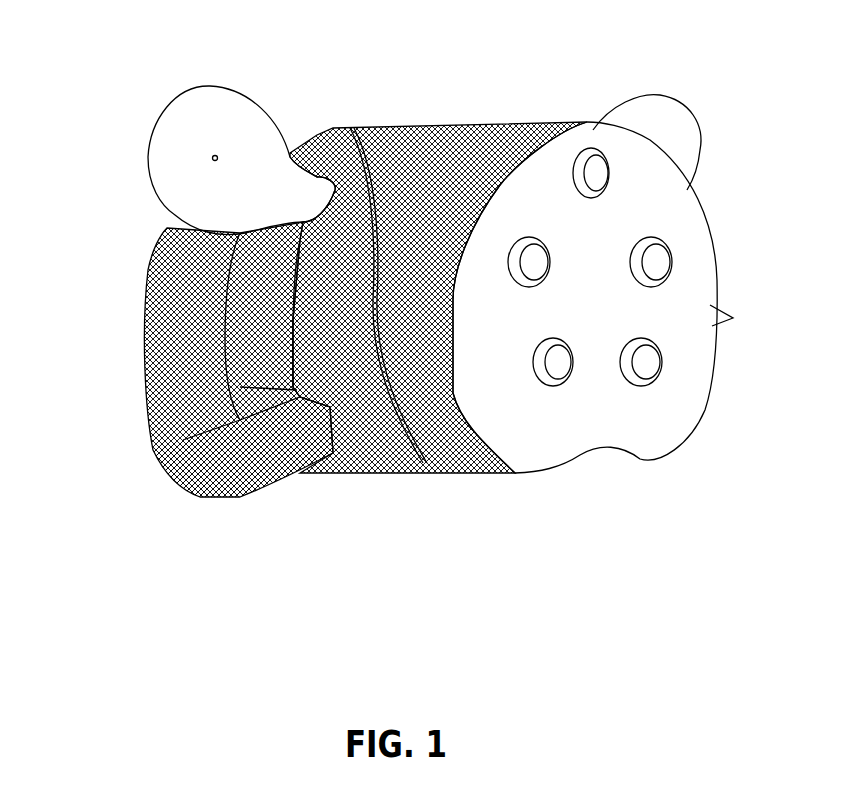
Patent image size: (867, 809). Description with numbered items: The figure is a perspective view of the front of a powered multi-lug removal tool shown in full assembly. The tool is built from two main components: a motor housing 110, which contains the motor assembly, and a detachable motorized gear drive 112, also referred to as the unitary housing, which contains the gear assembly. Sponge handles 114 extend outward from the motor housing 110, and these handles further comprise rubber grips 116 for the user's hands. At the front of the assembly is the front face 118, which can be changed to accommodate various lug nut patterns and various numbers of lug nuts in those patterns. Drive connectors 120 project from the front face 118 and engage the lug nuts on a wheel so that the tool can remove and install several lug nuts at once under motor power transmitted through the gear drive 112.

The motor housing 110 is at (357, 135).
The detachable motorized gear drive 112 is at (447, 443).
The sponge handles 114 is at (176, 98).
The rubber grips 116 is at (157, 361).
The front face 118 is at (638, 208).
The drive connectors 120 is at (658, 242).